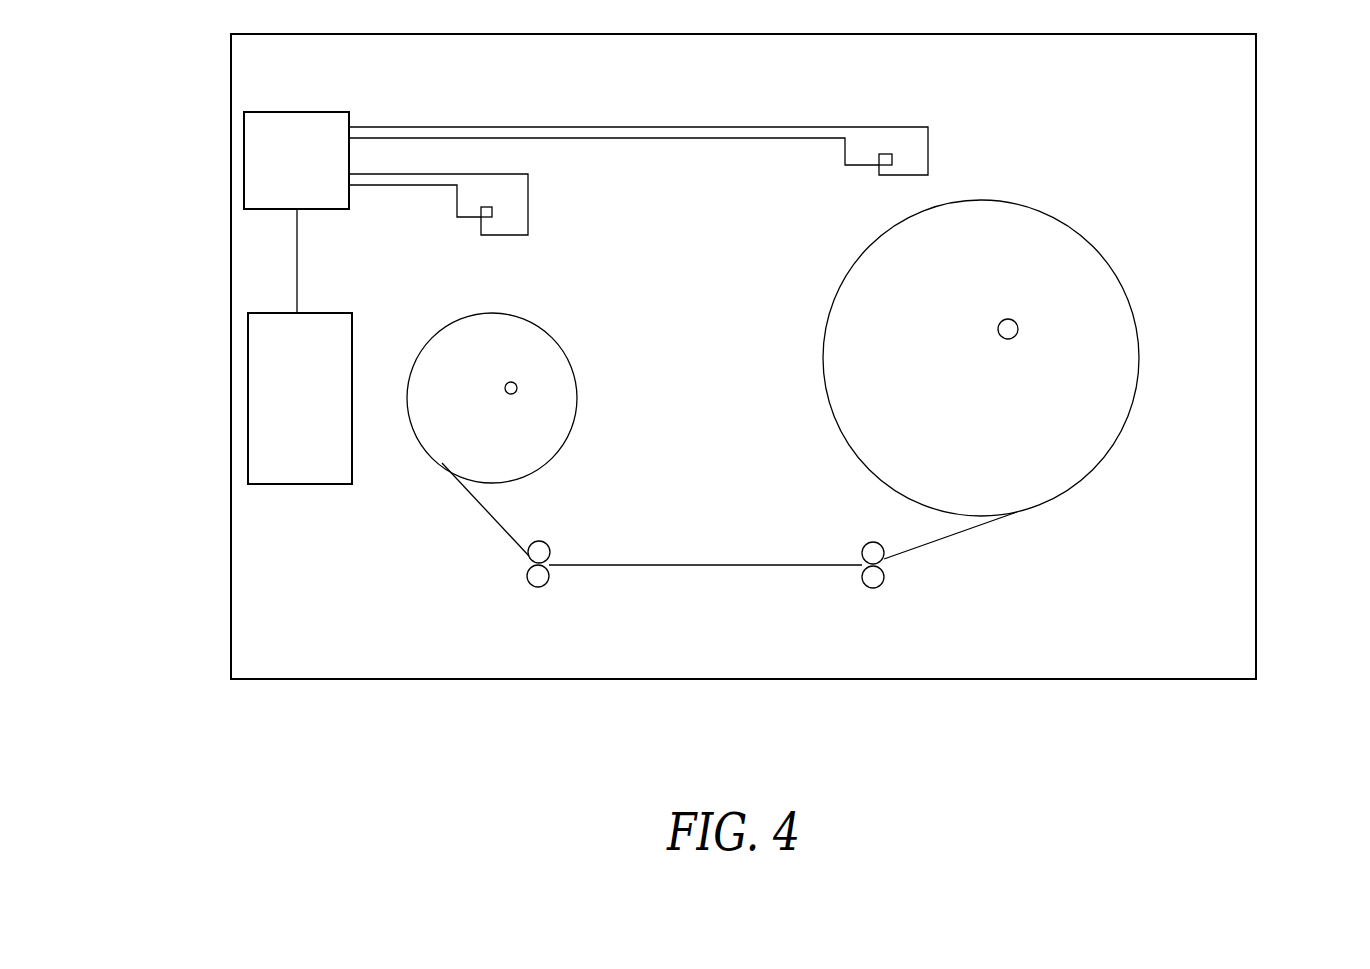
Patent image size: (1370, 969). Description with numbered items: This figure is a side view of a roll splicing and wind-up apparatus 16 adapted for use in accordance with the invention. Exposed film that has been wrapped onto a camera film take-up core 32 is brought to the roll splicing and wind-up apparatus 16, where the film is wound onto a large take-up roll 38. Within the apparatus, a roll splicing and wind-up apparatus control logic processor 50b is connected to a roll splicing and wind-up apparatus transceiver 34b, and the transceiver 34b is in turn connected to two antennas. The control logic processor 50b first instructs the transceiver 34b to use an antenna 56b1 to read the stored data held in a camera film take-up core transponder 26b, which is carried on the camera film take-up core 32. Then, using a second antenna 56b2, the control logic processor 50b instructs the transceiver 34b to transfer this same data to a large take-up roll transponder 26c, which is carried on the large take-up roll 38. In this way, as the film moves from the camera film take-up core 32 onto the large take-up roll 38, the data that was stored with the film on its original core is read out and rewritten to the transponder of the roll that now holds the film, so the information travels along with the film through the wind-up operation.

The roll splicing and wind-up apparatus 16 is at (1256, 498).
The roll splicing and wind-up apparatus transceiver 34b is at (242, 181).
The roll splicing and wind-up apparatus control logic processor 50b is at (250, 432).
The antenna 56b2 is at (892, 127).
The antenna 56b1 is at (530, 210).
The camera film take-up core 32 is at (562, 443).
The camera film take-up core transponder 26b is at (517, 388).
The large take-up roll 38 is at (1123, 427).
The large take-up roll transponder 26c is at (999, 321).